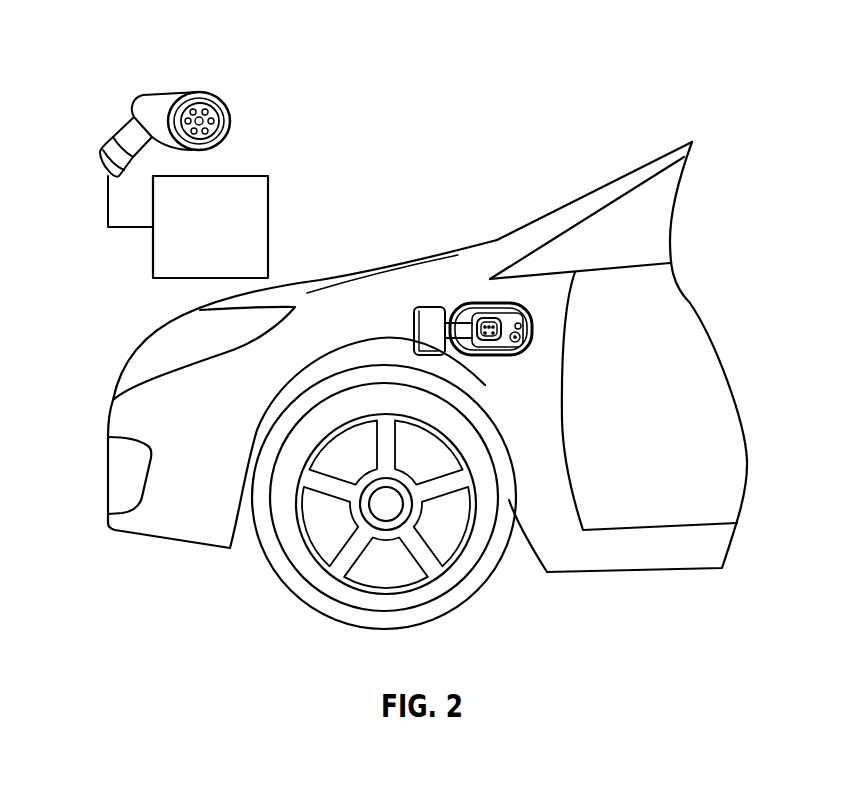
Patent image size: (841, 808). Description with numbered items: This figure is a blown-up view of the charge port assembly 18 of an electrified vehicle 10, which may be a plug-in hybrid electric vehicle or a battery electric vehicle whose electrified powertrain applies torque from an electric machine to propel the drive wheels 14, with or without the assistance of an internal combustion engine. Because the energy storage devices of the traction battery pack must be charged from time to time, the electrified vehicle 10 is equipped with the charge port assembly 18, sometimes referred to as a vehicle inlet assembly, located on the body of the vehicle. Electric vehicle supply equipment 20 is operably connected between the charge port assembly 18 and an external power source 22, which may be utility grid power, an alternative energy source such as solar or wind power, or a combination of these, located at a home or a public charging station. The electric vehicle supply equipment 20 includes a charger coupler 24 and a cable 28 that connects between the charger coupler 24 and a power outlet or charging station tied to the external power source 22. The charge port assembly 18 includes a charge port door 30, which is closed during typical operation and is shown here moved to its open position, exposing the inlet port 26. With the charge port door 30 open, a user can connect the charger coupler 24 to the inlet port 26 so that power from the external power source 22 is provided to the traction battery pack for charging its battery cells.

The electrified vehicle 10 is at (436, 272).
The drive wheels 14 is at (385, 629).
The charge port assembly 18 is at (493, 298).
The electric vehicle supply equipment 20 is at (131, 120).
The external power source 22 is at (268, 227).
The charger coupler 24 is at (157, 103).
The inlet port 26 is at (488, 353).
The cable 28 is at (100, 164).
The charge port door 30 is at (413, 330).